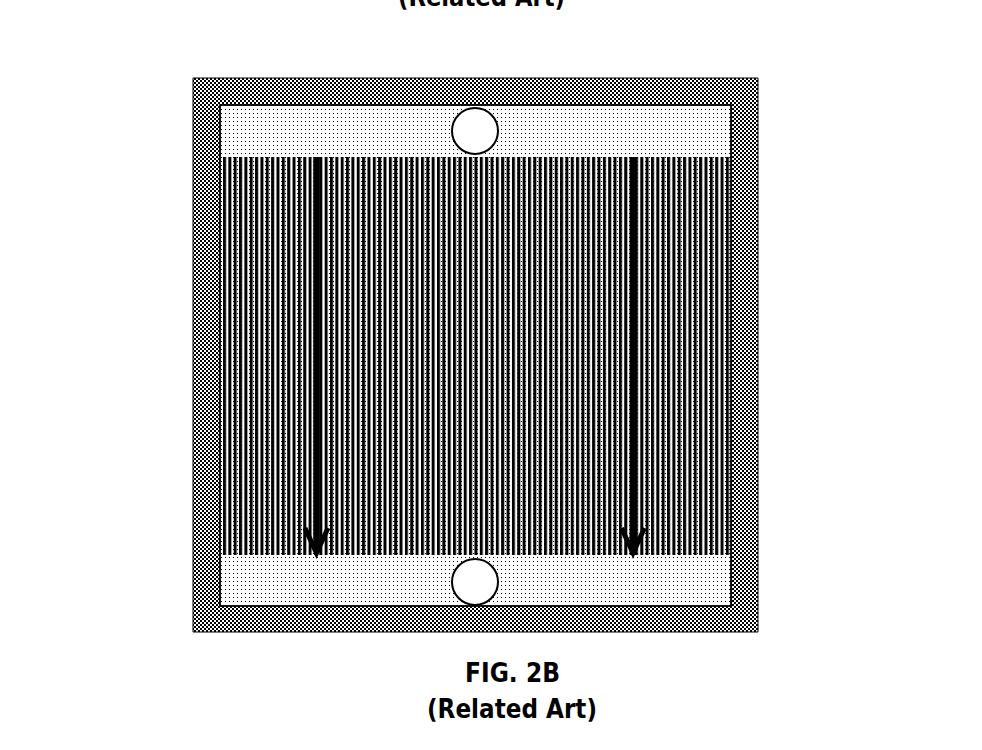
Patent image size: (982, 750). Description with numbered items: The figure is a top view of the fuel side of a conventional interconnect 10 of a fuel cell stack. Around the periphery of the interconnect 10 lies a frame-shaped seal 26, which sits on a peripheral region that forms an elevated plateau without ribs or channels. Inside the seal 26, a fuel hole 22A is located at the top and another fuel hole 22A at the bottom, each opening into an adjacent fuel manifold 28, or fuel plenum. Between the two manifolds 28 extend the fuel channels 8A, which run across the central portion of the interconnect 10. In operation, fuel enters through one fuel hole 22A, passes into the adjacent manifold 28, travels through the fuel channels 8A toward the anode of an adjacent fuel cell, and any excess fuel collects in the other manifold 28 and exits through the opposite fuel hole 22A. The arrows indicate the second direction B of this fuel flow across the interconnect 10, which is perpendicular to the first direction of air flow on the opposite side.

The interconnect 10 is at (150, 183).
The fuel hole 22A is at (493, 112).
The frame-shaped seal 26 is at (742, 436).
The fuel manifold 28 is at (649, 131).
The fuel channels 8A is at (690, 337).
The second direction B is at (635, 299).